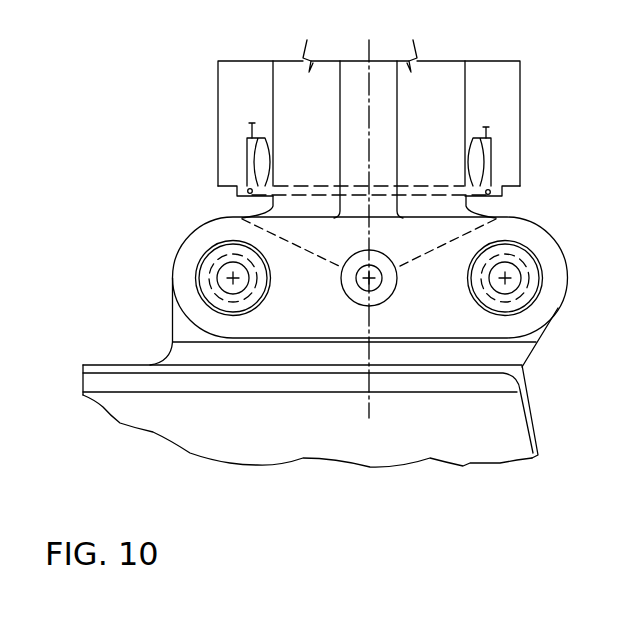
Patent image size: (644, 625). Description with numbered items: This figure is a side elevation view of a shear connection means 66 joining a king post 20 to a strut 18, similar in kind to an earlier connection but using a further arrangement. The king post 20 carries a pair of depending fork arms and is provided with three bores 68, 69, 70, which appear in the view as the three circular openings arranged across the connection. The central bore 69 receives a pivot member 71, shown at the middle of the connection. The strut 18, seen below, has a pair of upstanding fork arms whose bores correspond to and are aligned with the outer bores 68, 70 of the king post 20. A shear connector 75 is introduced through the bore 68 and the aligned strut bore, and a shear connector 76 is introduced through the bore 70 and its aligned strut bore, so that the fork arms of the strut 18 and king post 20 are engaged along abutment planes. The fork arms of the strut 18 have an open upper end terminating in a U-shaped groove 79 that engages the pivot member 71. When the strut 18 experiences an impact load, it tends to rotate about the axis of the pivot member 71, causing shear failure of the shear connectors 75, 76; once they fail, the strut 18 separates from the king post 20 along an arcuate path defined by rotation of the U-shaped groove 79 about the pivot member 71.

The strut 18 is at (223, 453).
The king post 20 is at (447, 113).
The shear connection means 66 is at (163, 254).
The bore 68 is at (250, 306).
The bore 69 is at (371, 298).
The bore 70 is at (493, 307).
The pivot member 71 is at (369, 278).
The shear connector 75 is at (227, 283).
The shear connector 76 is at (505, 278).
The U-shaped groove 79 is at (349, 294).